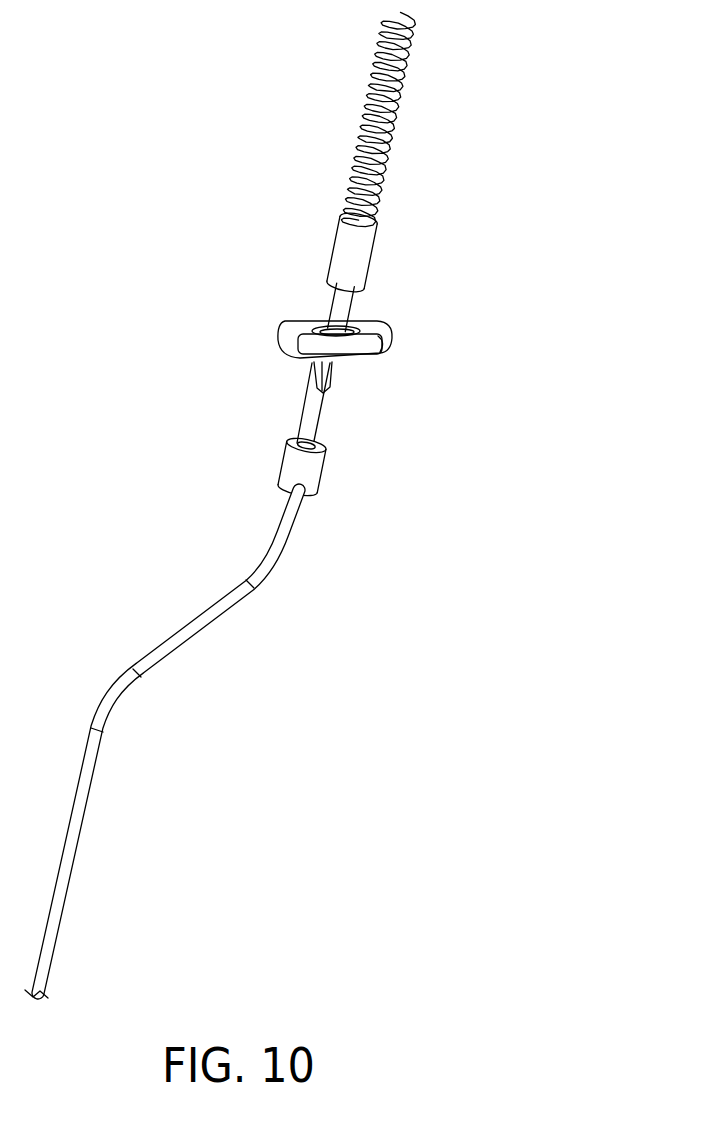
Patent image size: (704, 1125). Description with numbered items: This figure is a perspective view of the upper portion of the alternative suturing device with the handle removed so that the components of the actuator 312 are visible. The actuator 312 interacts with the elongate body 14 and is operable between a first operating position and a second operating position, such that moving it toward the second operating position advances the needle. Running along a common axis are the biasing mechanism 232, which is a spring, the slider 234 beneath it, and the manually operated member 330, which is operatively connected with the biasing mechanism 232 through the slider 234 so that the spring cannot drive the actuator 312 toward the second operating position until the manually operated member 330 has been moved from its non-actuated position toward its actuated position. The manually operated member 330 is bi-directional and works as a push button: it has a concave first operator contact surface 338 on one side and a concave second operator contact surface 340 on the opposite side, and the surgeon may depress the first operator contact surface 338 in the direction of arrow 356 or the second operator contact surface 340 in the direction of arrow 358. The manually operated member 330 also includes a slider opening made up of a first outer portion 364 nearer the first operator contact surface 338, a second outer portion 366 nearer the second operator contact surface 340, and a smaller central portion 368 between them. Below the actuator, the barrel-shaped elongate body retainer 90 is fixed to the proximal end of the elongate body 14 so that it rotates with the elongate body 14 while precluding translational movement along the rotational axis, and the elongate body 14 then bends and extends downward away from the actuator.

The biasing mechanism 232 is at (365, 107).
The slider 234 is at (347, 246).
The manually operated member 330 is at (302, 322).
The first operator contact surface 338 is at (280, 340).
The second operator contact surface 340 is at (385, 333).
The arrow 356 is at (232, 305).
The arrow 358 is at (478, 386).
The first outer portion 364 is at (297, 360).
The second outer portion 366 is at (355, 318).
The central portion 368 is at (340, 362).
The actuator 312 is at (555, 180).
The elongate body retainer 90 is at (290, 468).
The elongate body 14 is at (160, 657).